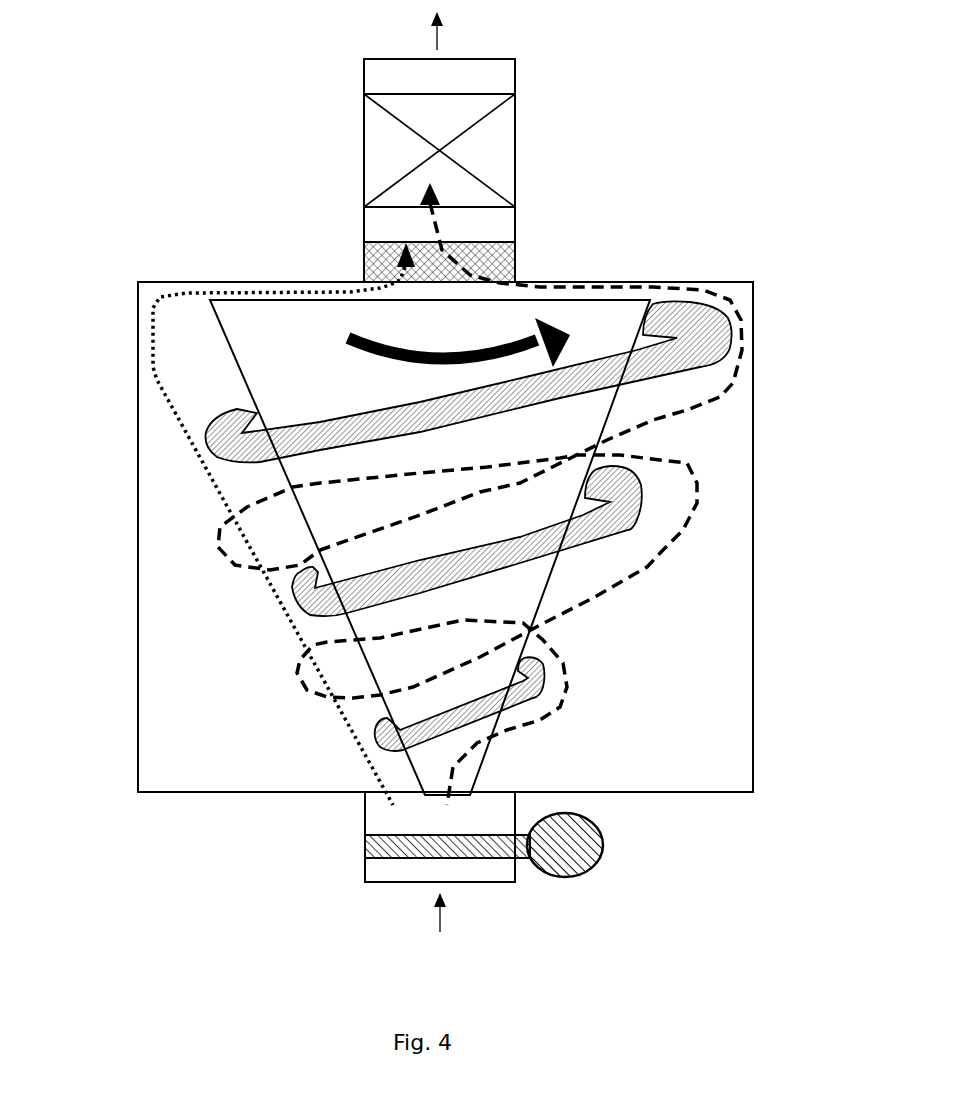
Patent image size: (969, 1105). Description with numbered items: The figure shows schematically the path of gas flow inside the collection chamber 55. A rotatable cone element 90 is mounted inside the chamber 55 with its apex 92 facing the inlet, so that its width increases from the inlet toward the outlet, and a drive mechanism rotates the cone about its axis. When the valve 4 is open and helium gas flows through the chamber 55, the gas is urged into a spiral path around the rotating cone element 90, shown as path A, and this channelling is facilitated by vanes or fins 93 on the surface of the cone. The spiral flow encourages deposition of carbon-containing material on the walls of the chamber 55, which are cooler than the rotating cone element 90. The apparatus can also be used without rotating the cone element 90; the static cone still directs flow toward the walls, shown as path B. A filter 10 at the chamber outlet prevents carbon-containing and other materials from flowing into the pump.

The valve 4 is at (484, 860).
The filter 10 is at (490, 258).
The collection chamber 55 is at (137, 347).
The cone element 90 is at (543, 425).
The apex 92 is at (458, 789).
The vanes or fins 93 is at (597, 520).
The path A is at (597, 604).
The path B is at (288, 615).